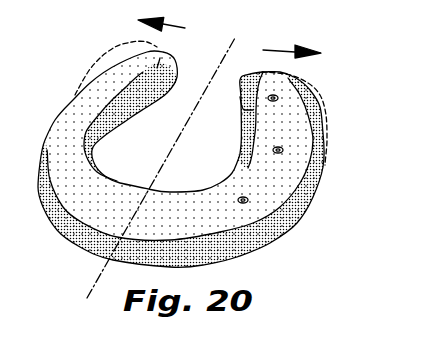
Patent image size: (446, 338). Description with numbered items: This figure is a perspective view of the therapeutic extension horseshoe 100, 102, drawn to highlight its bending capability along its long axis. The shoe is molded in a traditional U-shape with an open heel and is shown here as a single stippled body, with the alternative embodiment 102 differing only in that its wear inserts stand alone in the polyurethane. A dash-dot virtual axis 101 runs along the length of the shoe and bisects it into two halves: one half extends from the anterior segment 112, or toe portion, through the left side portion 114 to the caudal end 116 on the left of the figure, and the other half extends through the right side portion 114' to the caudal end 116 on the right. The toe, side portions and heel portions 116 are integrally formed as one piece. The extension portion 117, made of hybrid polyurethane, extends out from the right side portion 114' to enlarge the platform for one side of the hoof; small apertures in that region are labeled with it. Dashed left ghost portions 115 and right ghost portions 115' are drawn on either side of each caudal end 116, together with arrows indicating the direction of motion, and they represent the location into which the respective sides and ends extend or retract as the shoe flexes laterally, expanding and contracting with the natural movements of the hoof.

The therapeutic extension horseshoe 100 is at (197, 159).
The therapeutic extension horseshoe 102 is at (330, 198).
The virtual axis 101 is at (180, 152).
The anterior segment 112 is at (88, 258).
The left side portion 114 is at (104, 76).
The right side portion 114' is at (304, 119).
The left ghost portions 115 is at (124, 98).
The right ghost portions 115' is at (284, 99).
The heel portions 116 is at (176, 71).
The extension portion 117 is at (300, 143).